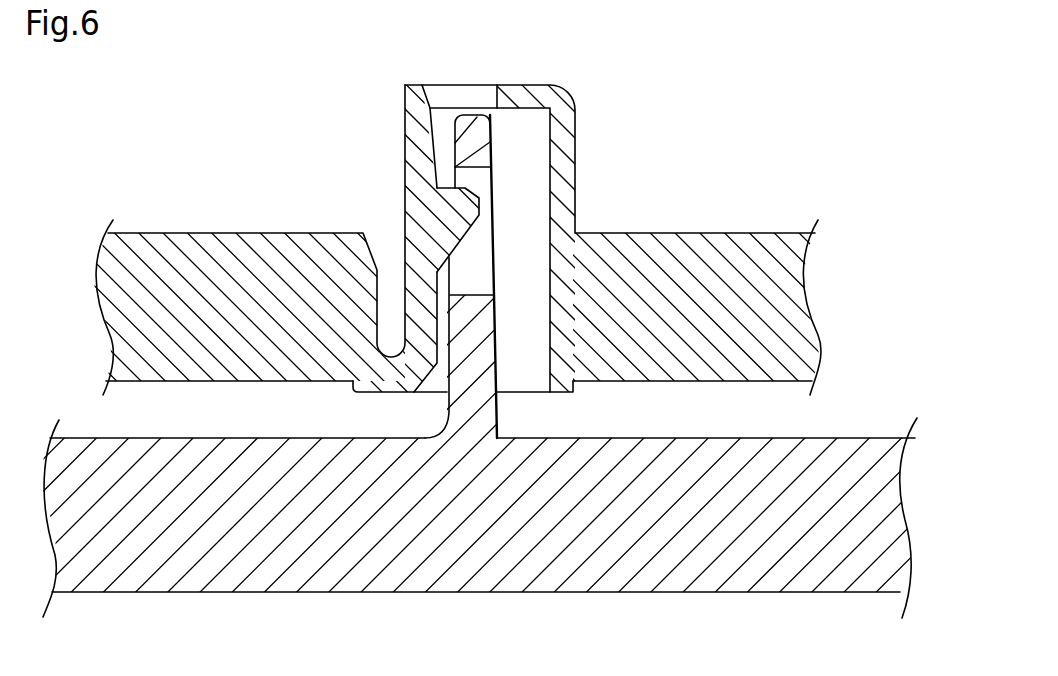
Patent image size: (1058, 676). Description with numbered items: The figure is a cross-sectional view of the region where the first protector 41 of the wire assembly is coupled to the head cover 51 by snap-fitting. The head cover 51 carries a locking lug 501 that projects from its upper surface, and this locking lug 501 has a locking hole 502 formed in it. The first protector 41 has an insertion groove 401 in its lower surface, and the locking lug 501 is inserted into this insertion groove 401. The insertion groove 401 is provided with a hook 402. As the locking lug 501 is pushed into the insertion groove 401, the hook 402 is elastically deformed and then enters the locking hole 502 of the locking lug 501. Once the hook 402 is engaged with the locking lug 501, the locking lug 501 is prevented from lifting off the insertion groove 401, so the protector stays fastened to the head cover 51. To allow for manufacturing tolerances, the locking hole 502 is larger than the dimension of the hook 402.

The first protector 41 is at (676, 233).
The head cover 51 is at (665, 595).
The insertion groove 401 is at (540, 384).
The hook 402 is at (486, 204).
The locking lug 501 is at (447, 412).
The locking hole 502 is at (468, 294).